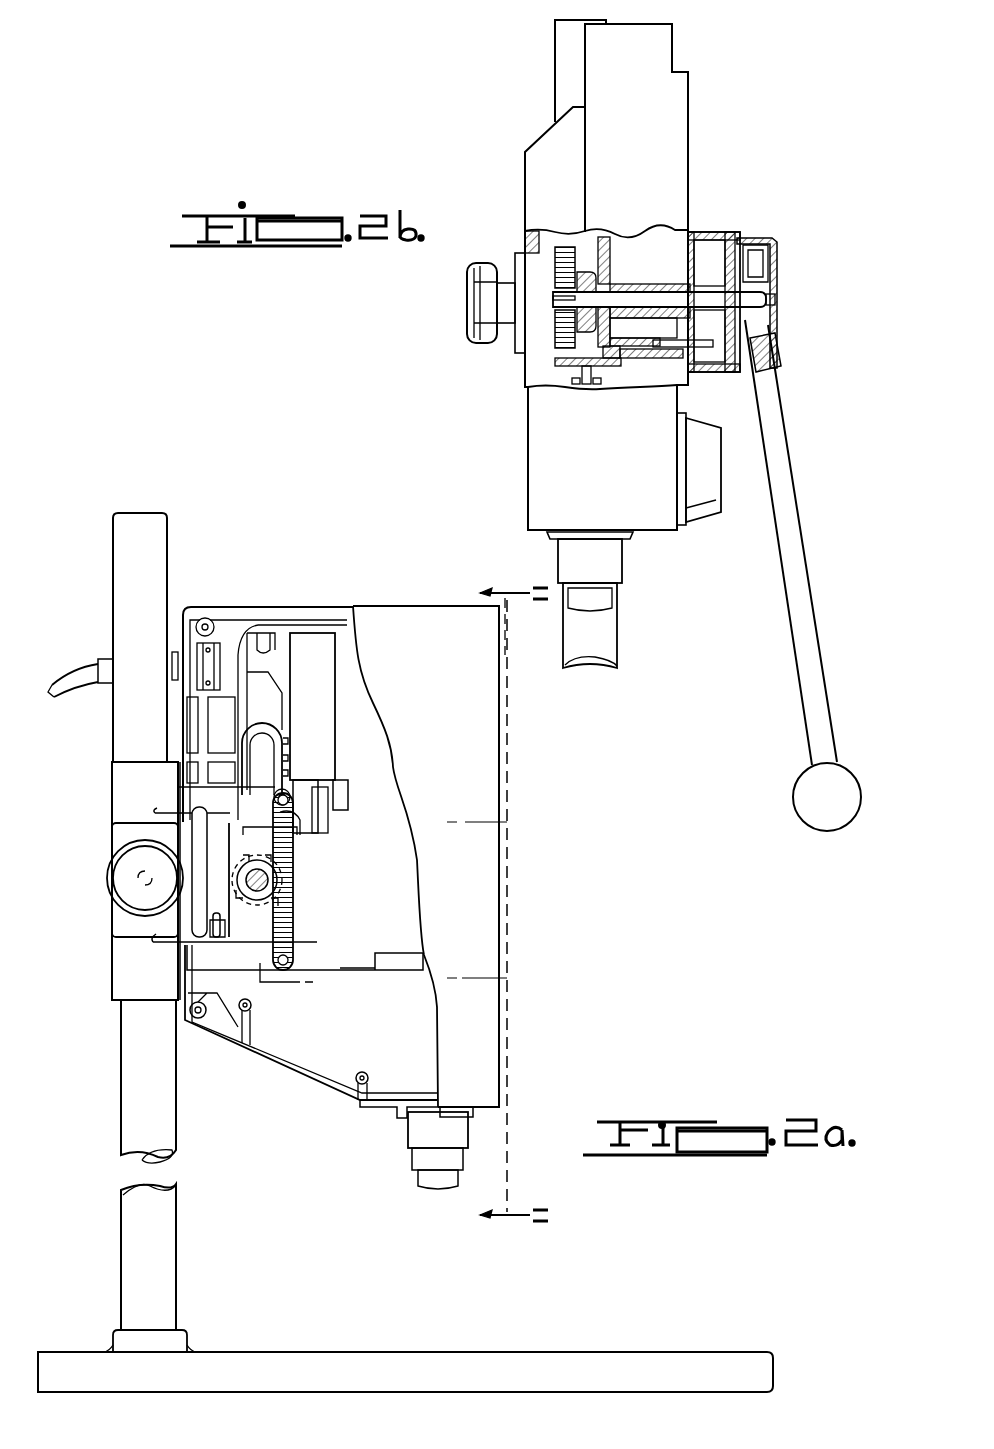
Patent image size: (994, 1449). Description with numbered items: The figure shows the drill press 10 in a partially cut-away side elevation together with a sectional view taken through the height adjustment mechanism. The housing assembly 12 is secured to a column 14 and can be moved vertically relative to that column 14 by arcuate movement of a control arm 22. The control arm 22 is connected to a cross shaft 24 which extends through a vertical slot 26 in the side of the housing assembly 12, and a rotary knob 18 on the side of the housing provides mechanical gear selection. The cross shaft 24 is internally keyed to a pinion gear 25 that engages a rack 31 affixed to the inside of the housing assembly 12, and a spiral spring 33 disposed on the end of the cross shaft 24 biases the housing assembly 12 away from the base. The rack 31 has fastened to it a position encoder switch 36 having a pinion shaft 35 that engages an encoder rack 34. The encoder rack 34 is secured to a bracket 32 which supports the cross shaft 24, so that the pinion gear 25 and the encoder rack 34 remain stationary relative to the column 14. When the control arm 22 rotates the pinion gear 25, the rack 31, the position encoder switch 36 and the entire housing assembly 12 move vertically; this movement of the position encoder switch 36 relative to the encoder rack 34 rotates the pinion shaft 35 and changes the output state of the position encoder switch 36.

In FIG. 2B, the drill press 10 is at (752, 170).
In FIG. 2A, the drill press 10 is at (399, 548).
In FIG. 2B, the housing assembly 12 is at (553, 127).
In FIG. 2A, the housing assembly 12 is at (433, 606).
In FIG. 2B, the column 14 is at (605, 626).
In FIG. 2A, the column 14 is at (165, 1116).
In FIG. 2B, the rotary knob 18 is at (702, 486).
In FIG. 2B, the control arm 22 is at (797, 551).
In FIG. 2B, the cross shaft 24 is at (628, 298).
In FIG. 2A, the cross shaft 24 is at (270, 880).
In FIG. 2B, the pinion gear 25 is at (587, 270).
In FIG. 2A, the pinion gear 25 is at (258, 913).
In FIG. 2A, the vertical slot 26 is at (243, 774).
In FIG. 2A, the rack 31 is at (303, 640).
In FIG. 2A, the bracket 32 is at (122, 792).
In FIG. 2B, the spiral spring 33 is at (555, 342).
In FIG. 2A, the encoder rack 34 is at (290, 928).
In FIG. 2A, the pinion shaft 35 is at (286, 820).
In FIG. 2A, the position encoder switch 36 is at (335, 780).